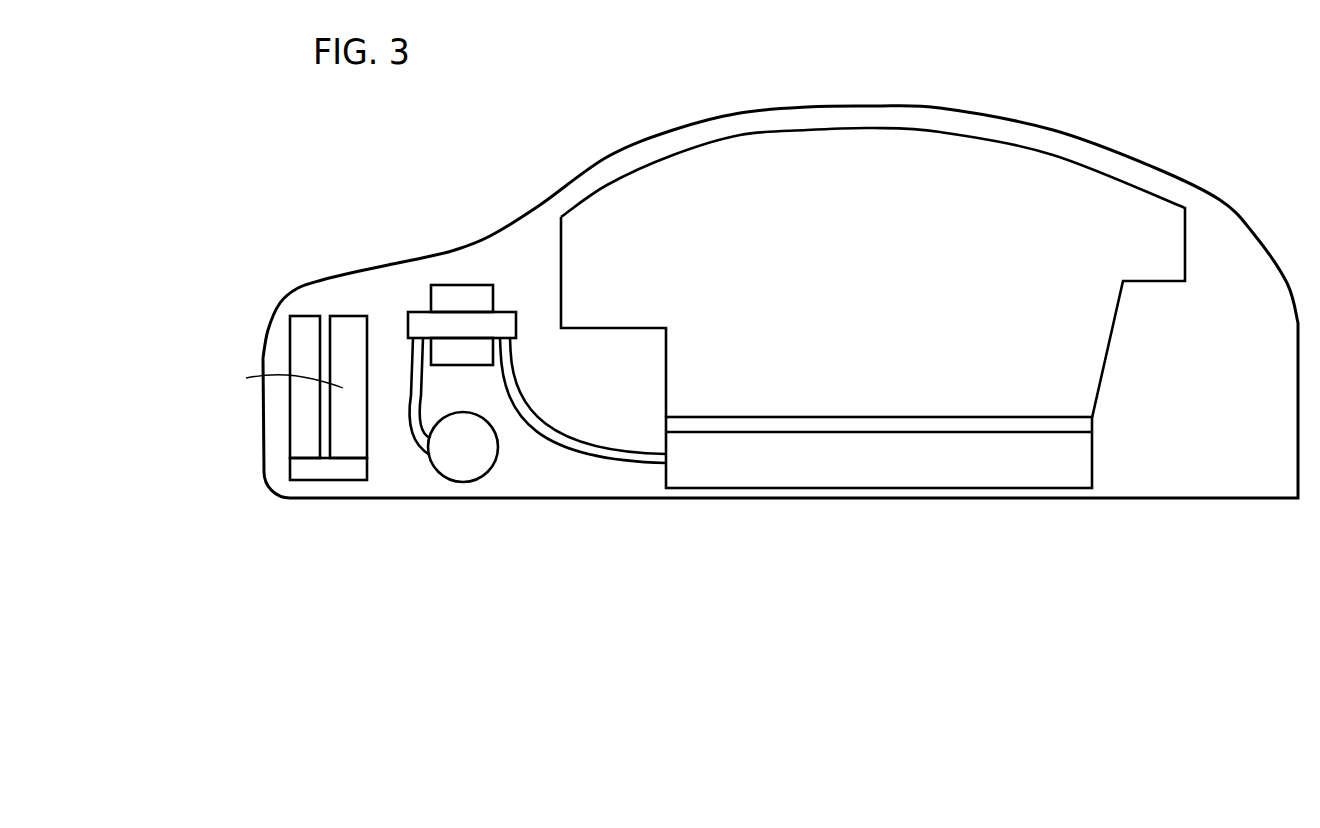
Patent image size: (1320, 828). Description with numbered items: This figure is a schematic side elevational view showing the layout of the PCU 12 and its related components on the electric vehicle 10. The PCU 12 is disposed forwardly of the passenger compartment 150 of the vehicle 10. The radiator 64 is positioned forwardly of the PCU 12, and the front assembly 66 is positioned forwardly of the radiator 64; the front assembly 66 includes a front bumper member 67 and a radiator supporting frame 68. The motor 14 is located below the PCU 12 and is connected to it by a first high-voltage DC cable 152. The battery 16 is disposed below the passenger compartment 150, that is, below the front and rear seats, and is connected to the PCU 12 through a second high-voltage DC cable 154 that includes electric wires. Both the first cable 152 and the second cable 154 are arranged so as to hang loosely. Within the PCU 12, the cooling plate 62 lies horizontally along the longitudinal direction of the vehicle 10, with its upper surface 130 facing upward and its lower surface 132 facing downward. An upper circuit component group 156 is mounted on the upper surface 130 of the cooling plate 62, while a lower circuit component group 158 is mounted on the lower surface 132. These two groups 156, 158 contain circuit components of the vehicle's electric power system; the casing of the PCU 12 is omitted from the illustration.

The vehicle 10 is at (362, 124).
The PCU 12 is at (511, 305).
The motor 14 is at (488, 474).
The battery 16 is at (699, 477).
The cooling plate 62 is at (500, 328).
The radiator 64 is at (257, 414).
The front assembly 66 is at (326, 453).
The front bumper member 67 is at (304, 450).
The radiator supporting frame 68 is at (350, 478).
The upper surface 130 is at (515, 378).
The lower surface 132 is at (510, 342).
The passenger compartment 150 is at (762, 165).
The first high-voltage DC cable 152 is at (412, 452).
The second high-voltage DC cable 154 is at (563, 440).
The upper circuit component group 156 is at (450, 283).
The lower circuit component group 158 is at (482, 353).